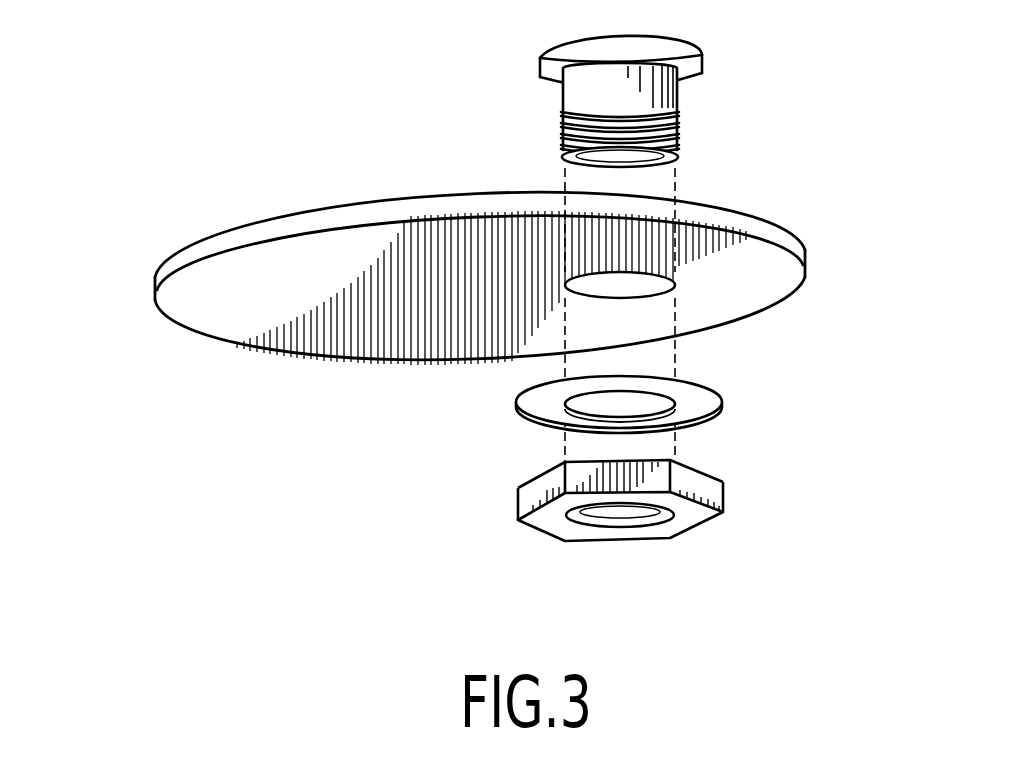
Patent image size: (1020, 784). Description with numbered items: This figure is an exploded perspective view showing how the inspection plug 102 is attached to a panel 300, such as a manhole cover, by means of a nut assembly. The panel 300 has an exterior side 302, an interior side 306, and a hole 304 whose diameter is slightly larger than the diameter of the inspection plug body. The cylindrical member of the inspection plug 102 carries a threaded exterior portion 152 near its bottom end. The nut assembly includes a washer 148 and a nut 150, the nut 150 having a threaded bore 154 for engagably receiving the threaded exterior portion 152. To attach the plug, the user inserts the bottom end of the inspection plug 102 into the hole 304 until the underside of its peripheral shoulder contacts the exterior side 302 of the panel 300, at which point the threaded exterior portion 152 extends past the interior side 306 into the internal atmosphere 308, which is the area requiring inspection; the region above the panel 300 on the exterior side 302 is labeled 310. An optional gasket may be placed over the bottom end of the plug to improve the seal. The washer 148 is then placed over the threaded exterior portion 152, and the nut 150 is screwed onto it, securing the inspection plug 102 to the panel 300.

The inspection plug 102 is at (688, 103).
The threaded exterior portion 152 is at (693, 108).
The panel 300 is at (820, 255).
The exterior side 302 is at (156, 279).
The hole 304 is at (653, 287).
The interior side 306 is at (156, 300).
The internal atmosphere 308 is at (442, 612).
The upper region 310 is at (378, 132).
The washer 148 is at (738, 416).
The nut 150 is at (740, 491).
The threaded bore 154 is at (664, 506).